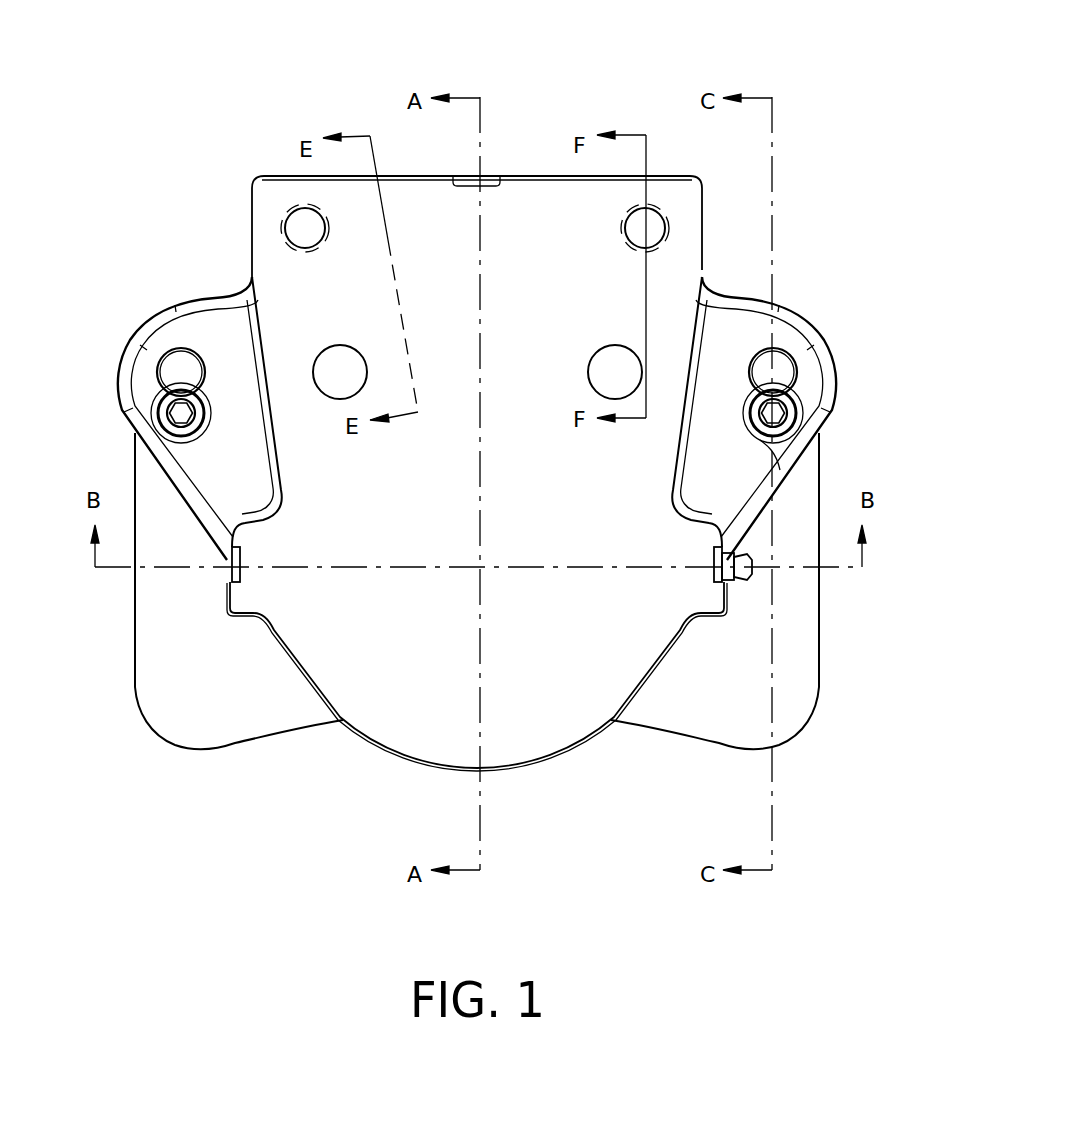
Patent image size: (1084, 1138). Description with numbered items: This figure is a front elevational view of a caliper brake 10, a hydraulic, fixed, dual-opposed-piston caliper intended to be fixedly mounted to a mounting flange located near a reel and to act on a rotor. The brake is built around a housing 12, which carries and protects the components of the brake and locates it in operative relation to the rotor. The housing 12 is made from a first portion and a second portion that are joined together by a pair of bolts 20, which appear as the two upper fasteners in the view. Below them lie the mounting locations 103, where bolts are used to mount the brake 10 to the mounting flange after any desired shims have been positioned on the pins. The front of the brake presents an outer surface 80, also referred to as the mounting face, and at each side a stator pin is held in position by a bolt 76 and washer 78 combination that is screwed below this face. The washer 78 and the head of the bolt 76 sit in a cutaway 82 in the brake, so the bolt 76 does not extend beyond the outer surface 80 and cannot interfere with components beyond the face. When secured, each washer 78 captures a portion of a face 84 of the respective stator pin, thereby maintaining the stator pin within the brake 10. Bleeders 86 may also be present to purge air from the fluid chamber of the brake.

The caliper brake 10 is at (270, 799).
The housing 12 is at (512, 197).
The bolts 20 is at (304, 226).
The mounting locations 103 is at (330, 362).
The outer surface 80 is at (613, 457).
The face of stator pin 84 is at (780, 367).
The bolt 76 is at (777, 412).
The washer 78 is at (787, 421).
The cutaway 82 is at (753, 568).
The bleeders 86 is at (753, 434).